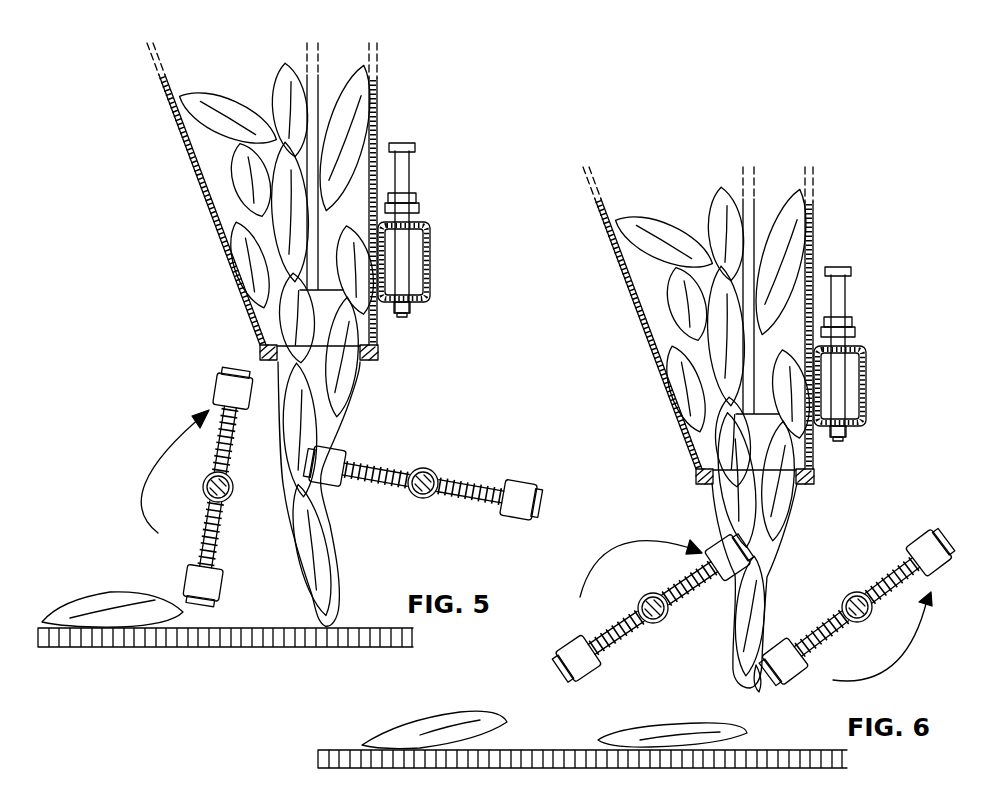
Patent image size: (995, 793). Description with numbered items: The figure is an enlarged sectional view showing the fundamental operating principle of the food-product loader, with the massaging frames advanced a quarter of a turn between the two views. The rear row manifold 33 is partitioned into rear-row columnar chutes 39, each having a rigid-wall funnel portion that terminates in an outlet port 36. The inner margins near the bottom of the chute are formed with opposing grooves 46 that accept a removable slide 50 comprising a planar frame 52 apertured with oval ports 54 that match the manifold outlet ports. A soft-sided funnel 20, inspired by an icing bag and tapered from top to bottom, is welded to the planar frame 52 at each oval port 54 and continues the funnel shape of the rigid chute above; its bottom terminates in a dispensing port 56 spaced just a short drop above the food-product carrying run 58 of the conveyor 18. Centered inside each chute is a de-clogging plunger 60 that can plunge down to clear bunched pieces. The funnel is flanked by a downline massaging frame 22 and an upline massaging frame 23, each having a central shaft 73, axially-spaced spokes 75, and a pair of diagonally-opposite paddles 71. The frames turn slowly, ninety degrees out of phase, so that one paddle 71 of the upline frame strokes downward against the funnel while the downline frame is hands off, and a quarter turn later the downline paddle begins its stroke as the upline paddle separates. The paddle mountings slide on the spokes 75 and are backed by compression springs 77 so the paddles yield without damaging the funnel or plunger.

In FIG. 6, the conveyor 18 is at (551, 738).
In FIG. 6, the food-product carrying run 58 is at (343, 750).
In FIG. 6, the soft-sided funnel 20 is at (783, 550).
In FIG. 5, the downline massaging frame 22 is at (217, 387).
In FIG. 6, the downline massaging frame 22 is at (573, 648).
In FIG. 5, the upline massaging frame 23 is at (456, 463).
In FIG. 6, the upline massaging frame 23 is at (943, 560).
In FIG. 5, the rear row manifold 33 is at (310, 230).
In FIG. 5, the rear-row columnar chute 39 is at (377, 107).
In FIG. 5, the outlet port 36 is at (367, 339).
In FIG. 5, the oval port 54 is at (366, 345).
In FIG. 6, the groove 46 is at (805, 482).
In FIG. 6, the removable slide 50 is at (801, 489).
In FIG. 6, the planar frame 52 is at (801, 489).
In FIG. 6, the dispensing port 56 is at (740, 680).
In FIG. 6, the de-clogging plunger 60 is at (742, 208).
In FIG. 5, the paddle 71 is at (456, 463).
In FIG. 5, the central shaft 73 is at (230, 493).
In FIG. 5, the spoke 75 is at (495, 462).
In FIG. 6, the compression spring 77 is at (627, 637).